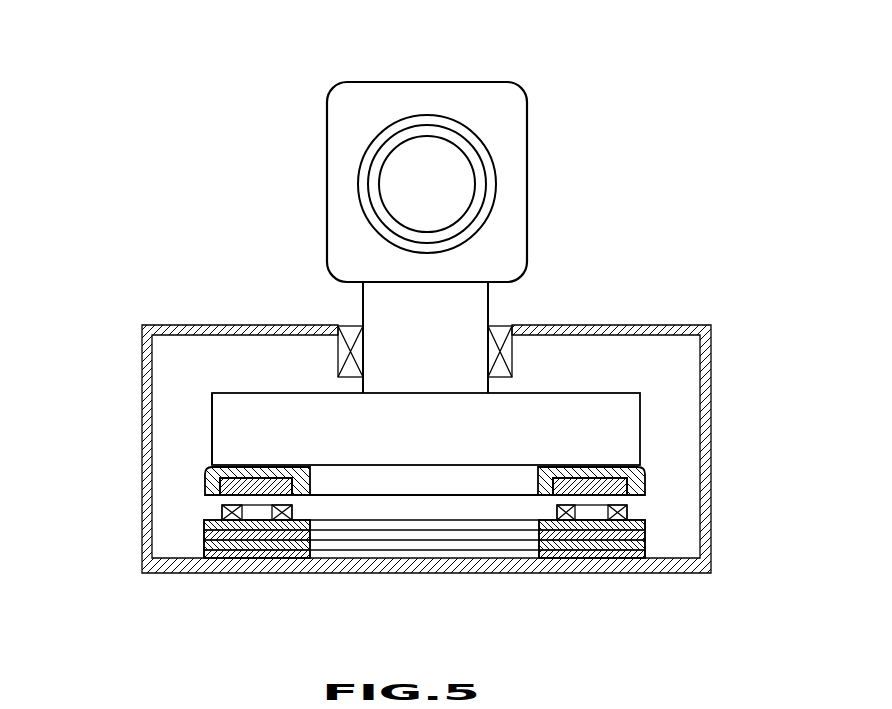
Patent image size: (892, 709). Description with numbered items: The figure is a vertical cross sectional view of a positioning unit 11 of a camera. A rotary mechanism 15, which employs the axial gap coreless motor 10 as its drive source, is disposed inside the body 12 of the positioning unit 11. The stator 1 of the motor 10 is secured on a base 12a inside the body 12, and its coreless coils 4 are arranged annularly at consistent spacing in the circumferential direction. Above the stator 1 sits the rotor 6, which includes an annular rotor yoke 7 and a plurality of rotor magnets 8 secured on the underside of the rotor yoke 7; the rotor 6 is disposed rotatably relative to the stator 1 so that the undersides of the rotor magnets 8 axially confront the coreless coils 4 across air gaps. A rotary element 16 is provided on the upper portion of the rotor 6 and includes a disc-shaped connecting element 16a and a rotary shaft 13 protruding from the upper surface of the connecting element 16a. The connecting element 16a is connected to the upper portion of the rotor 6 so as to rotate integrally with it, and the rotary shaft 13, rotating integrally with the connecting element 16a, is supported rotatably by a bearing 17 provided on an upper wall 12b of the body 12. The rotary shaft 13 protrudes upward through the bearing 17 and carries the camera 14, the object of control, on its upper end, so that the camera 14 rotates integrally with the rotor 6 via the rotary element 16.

The stator 1 is at (195, 546).
The coreless coils 4 is at (628, 512).
The rotor 6 is at (190, 474).
The rotor yoke 7 is at (645, 483).
The rotor magnets 8 is at (588, 492).
The axial gap coreless motor 10 is at (356, 532).
The positioning unit 11 is at (670, 250).
The body 12 is at (712, 461).
The base 12a is at (607, 575).
The upper wall 12b is at (650, 325).
The rotary shaft 13 is at (377, 303).
The camera 14 is at (428, 82).
The rotary mechanism 15 is at (660, 427).
The rotary element 16 is at (216, 392).
The connecting element 16a is at (212, 420).
The bearing 17 is at (500, 325).